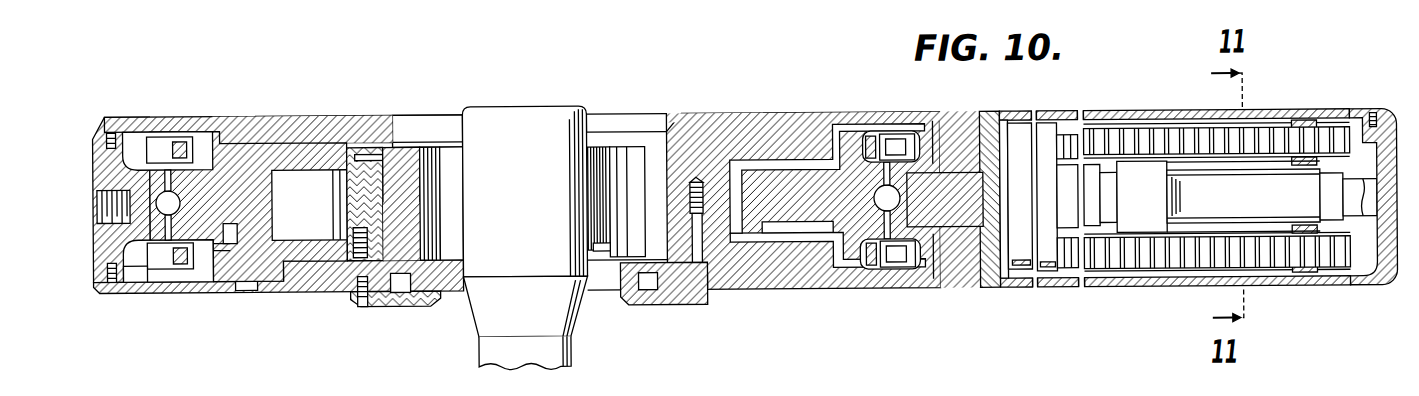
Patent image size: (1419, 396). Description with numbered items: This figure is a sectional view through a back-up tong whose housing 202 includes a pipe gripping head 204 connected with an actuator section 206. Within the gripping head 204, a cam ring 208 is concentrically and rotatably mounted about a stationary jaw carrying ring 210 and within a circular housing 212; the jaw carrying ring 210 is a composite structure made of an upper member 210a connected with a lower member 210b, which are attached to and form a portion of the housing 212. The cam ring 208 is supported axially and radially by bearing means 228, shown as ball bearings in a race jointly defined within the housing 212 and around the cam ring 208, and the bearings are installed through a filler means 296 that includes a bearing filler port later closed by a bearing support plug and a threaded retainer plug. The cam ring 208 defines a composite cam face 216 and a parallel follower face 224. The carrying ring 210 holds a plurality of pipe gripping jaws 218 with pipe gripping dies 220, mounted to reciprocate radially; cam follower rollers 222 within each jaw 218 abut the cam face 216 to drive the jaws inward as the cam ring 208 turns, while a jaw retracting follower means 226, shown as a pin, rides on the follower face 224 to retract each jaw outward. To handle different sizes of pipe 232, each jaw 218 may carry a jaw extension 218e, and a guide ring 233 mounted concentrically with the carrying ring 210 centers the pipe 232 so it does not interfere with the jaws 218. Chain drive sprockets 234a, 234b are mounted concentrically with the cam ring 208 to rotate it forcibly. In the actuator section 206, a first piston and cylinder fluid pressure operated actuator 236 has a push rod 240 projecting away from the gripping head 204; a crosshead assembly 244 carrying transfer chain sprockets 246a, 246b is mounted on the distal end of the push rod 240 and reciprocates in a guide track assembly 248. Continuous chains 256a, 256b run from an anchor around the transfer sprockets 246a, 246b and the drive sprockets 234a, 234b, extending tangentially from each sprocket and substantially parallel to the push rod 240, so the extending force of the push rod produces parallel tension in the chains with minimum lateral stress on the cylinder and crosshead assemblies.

The housing 202 is at (702, 103).
The pipe gripping head 204 is at (327, 114).
The actuator section 206 is at (1102, 112).
The cam ring 208 is at (790, 170).
The jaw carrying ring 210 is at (158, 114).
The upper member 210a is at (237, 123).
The lower member 210b is at (307, 277).
The circular housing 212 is at (93, 135).
The cam face 216 is at (277, 157).
The pipe gripping jaw 218 is at (400, 144).
The jaw extension 218e is at (403, 198).
The pipe gripping die 220 is at (600, 146).
The cam follower roller 222 is at (327, 172).
The follower face 224 is at (767, 233).
The jaw retracting follower means 226 is at (247, 214).
The bearing means 228 is at (130, 271).
The pipe 232 is at (525, 110).
The guide ring 233 is at (650, 292).
The chain drive sprocket 234a is at (867, 144).
The chain drive sprocket 234b is at (880, 258).
The first piston and cylinder linear fluid pressure operated actuator 236 is at (1015, 267).
The push rod 240 is at (1093, 230).
The crosshead assembly 244 is at (1247, 196).
The transfer chain sprocket 246a is at (1280, 141).
The transfer chain sprocket 246b is at (1283, 256).
The guide track assembly 248 is at (1337, 209).
The chain 256a is at (1208, 140).
The chain 256b is at (1210, 256).
The filler means 296 is at (113, 216).